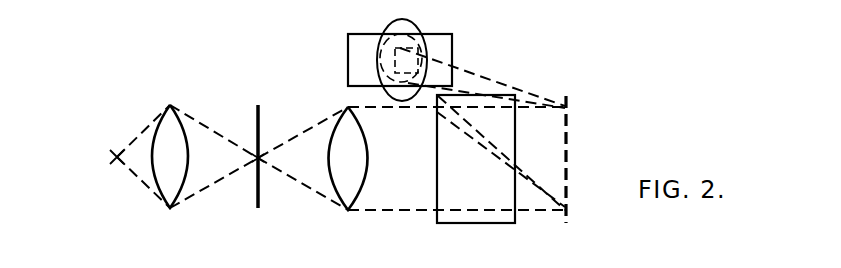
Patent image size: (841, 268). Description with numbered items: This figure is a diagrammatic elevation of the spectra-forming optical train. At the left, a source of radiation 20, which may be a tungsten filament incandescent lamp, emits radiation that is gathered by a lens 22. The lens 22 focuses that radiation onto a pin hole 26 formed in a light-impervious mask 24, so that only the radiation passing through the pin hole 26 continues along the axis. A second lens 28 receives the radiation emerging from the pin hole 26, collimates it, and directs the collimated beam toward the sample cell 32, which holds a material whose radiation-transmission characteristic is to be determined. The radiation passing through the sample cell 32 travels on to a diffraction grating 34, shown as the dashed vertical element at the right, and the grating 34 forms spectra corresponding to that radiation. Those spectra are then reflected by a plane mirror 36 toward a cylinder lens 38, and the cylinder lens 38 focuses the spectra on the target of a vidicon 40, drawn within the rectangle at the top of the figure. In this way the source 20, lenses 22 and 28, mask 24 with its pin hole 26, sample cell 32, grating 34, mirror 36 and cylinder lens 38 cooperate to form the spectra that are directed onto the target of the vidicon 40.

The source of radiation 20 is at (113, 164).
The lens 22 is at (163, 205).
The light-impervious mask 24 is at (259, 209).
The pin hole 26 is at (256, 162).
The lens 28 is at (345, 206).
The sample cell 32 is at (464, 225).
The diffraction grating 34 is at (569, 159).
The plane mirror 36 is at (417, 31).
The cylinder lens 38 is at (452, 47).
The vidicon 40 is at (378, 35).